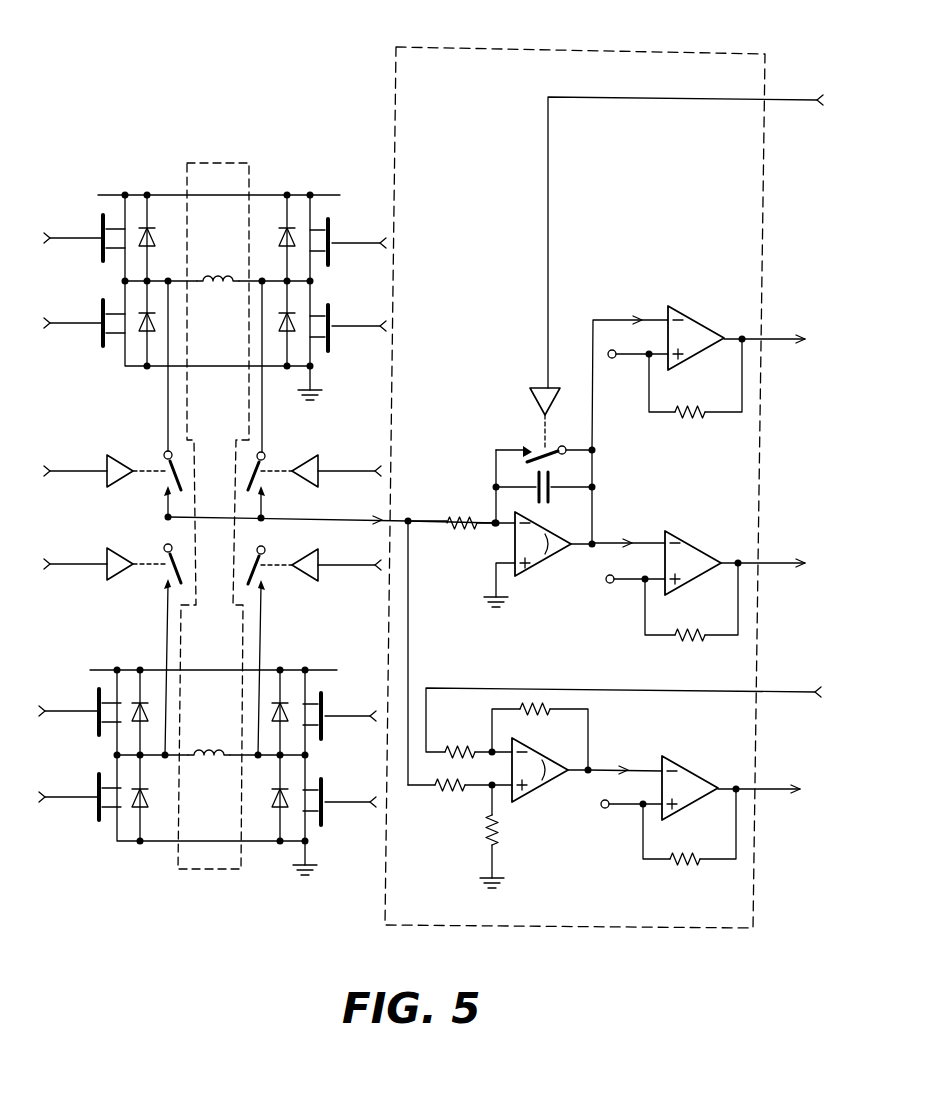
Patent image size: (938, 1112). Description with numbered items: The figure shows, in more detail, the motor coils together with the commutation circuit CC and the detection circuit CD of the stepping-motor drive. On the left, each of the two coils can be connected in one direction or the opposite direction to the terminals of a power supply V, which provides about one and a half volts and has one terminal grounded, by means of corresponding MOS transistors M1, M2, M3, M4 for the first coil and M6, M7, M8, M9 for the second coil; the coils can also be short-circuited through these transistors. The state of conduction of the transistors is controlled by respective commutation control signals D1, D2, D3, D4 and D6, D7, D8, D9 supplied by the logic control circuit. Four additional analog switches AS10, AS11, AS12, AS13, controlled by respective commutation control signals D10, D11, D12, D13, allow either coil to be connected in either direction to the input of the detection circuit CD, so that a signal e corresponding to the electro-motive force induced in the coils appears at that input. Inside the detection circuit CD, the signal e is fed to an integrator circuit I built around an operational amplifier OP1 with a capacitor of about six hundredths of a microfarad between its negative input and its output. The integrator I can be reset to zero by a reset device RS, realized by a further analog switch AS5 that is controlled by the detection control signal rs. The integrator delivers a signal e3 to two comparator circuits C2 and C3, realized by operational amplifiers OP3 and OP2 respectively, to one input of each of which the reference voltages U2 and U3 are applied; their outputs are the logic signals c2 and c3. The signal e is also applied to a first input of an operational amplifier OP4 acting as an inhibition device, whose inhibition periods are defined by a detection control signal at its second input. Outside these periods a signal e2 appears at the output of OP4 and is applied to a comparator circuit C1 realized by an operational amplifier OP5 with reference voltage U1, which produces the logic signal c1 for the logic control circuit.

The commutation circuit CC is at (213, 436).
The detection circuit CD is at (575, 468).
The power supply V is at (223, 433).
The commutation control signal D1 is at (73, 224).
The commutation control signal D2 is at (73, 310).
The commutation control signal D3 is at (359, 231).
The commutation control signal D4 is at (359, 315).
The commutation control signal D6 is at (69, 699).
The commutation control signal D7 is at (69, 785).
The commutation control signal D8 is at (350, 704).
The commutation control signal D9 is at (350, 790).
The commutation control signal D10 is at (75, 551).
The commutation control signal D11 is at (75, 457).
The commutation control signal D12 is at (349, 457).
The commutation control signal D13 is at (349, 552).
The MOS transistor M1 is at (99, 250).
The MOS transistor M2 is at (99, 335).
The MOS transistor M3 is at (334, 250).
The MOS transistor M4 is at (334, 337).
The MOS transistor M6 is at (95, 724).
The MOS transistor M7 is at (95, 809).
The MOS transistor M8 is at (327, 724).
The MOS transistor M9 is at (327, 811).
The analog switch AS10 is at (138, 638).
The analog switch AS11 is at (138, 471).
The analog switch AS12 is at (283, 470).
The analog switch AS13 is at (283, 638).
The analog switch AS5 is at (522, 414).
The signal e is at (330, 507).
The reset device RS is at (500, 445).
The integrator circuit I is at (482, 482).
The detection control signal rs is at (685, 229).
The operational amplifier OP1 is at (538, 560).
The operational amplifier OP2 is at (694, 326).
The operational amplifier OP3 is at (691, 550).
The operational amplifier OP4 is at (552, 792).
The operational amplifier OP5 is at (688, 774).
The signal e3 is at (630, 420).
The signal e2 is at (625, 758).
The reference voltage U1 is at (627, 819).
The reference voltage U2 is at (630, 593).
The reference voltage U3 is at (632, 368).
The comparator circuit C1 is at (650, 866).
The comparator circuit C2 is at (657, 642).
The comparator circuit C3 is at (659, 420).
The logic signal c1 is at (771, 775).
The logic signal c2 is at (775, 549).
The logic signal c3 is at (777, 325).